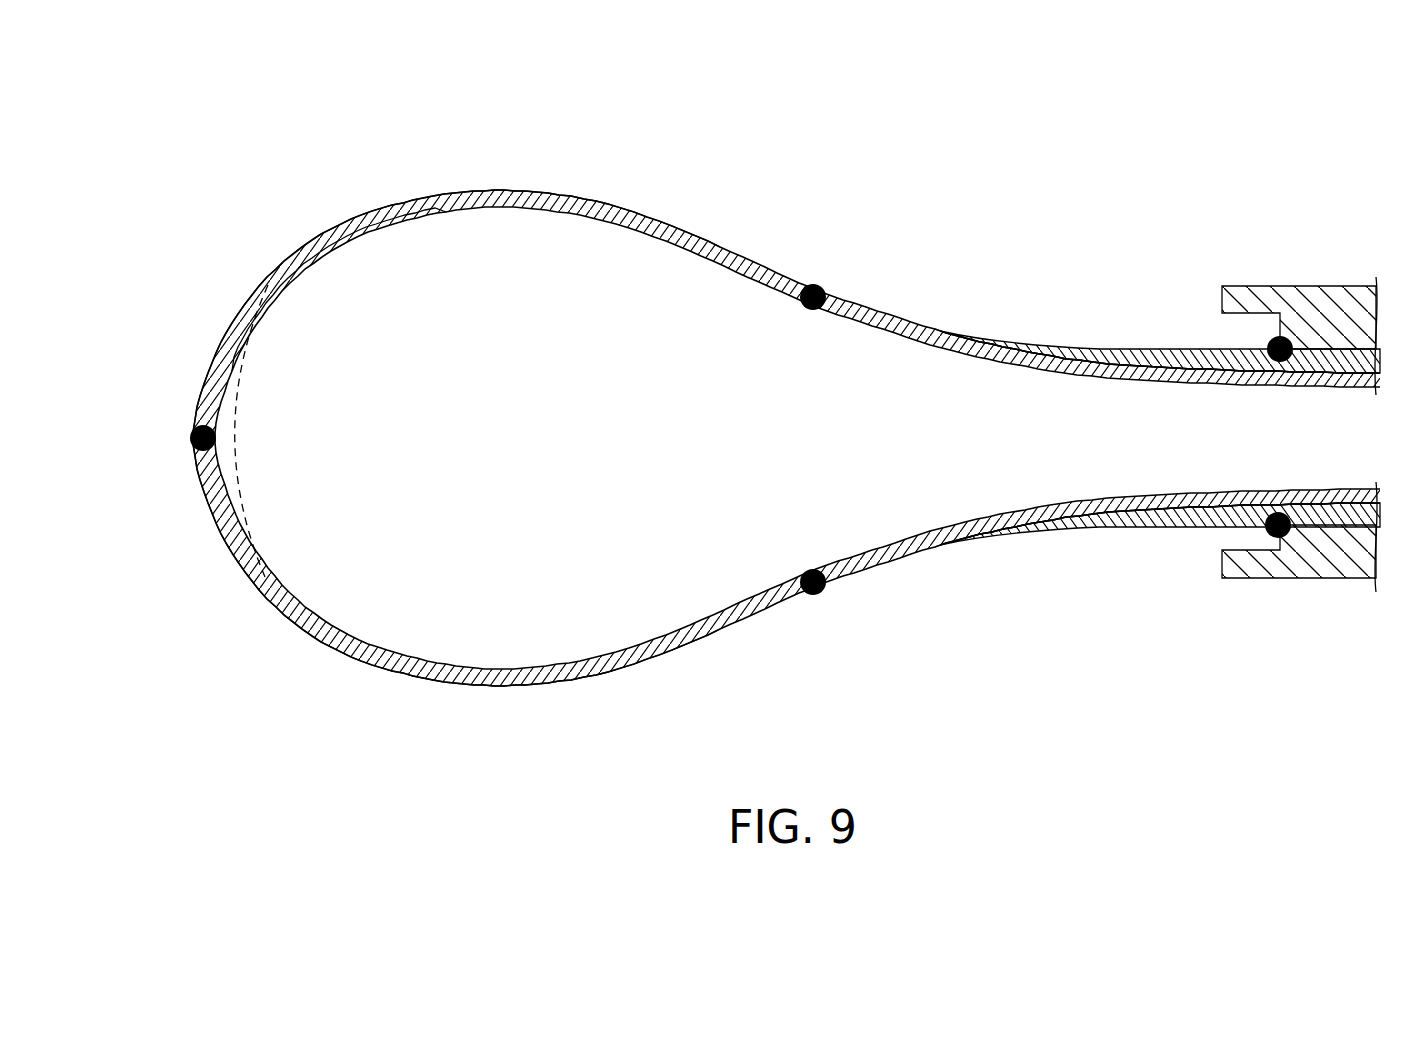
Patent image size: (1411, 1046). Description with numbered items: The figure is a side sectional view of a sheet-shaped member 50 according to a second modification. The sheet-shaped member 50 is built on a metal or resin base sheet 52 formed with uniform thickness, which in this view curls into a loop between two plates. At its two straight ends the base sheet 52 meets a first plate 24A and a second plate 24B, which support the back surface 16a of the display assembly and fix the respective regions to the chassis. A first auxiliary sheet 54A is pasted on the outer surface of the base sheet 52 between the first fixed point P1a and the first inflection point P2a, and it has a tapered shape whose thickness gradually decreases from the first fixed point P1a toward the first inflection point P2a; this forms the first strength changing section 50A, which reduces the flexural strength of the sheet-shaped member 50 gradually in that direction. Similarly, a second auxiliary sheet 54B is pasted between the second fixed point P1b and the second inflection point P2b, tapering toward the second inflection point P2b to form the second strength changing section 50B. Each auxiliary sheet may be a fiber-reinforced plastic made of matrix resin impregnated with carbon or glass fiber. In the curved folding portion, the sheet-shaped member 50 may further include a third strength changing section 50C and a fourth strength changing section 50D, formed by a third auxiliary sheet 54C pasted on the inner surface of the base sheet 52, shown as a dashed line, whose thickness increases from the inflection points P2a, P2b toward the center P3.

The sheet-shaped member 50 is at (312, 106).
The base sheet 52 is at (886, 305).
The first auxiliary sheet 54A is at (1128, 348).
The second auxiliary sheet 54B is at (1128, 514).
The third auxiliary sheet 54C is at (232, 438).
The first strength changing section 50A is at (1063, 332).
The second strength changing section 50B is at (1062, 545).
The third strength changing section 50C is at (470, 181).
The fourth strength changing section 50D is at (469, 698).
The first plate 24A is at (1305, 290).
The second plate 24B is at (1303, 586).
The back surface 16a is at (1350, 345).
The first fixed point P1a is at (1280, 364).
The second fixed point P1b is at (1278, 510).
The first inflection point P2a is at (813, 284).
The second inflection point P2b is at (813, 596).
The center P3 is at (190, 438).